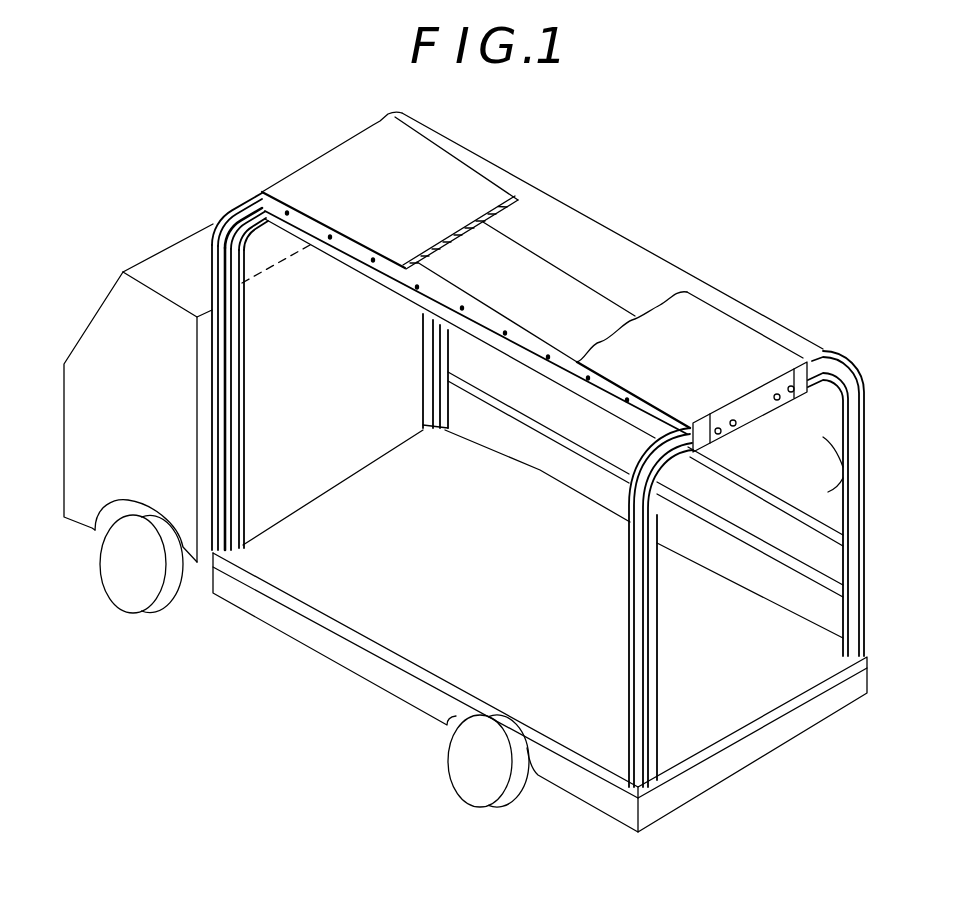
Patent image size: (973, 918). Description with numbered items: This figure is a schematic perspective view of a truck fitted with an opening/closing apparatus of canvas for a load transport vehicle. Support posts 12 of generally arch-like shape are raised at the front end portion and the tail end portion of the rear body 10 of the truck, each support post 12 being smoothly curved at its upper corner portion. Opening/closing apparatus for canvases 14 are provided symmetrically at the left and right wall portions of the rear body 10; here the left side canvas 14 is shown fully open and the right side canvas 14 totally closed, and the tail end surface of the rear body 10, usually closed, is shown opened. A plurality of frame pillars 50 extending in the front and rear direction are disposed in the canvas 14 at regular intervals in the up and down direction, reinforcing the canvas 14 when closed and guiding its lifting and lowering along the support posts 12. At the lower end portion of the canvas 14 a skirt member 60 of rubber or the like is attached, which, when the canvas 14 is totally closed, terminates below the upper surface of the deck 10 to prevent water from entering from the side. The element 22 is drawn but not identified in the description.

The rear body 10 is at (475, 580).
The support post 12 is at (214, 226).
The canvas 14 is at (540, 253).
The panel / board 22 is at (318, 152).
The frame pillar 50 is at (847, 470).
The skirt member 60 is at (247, 203).